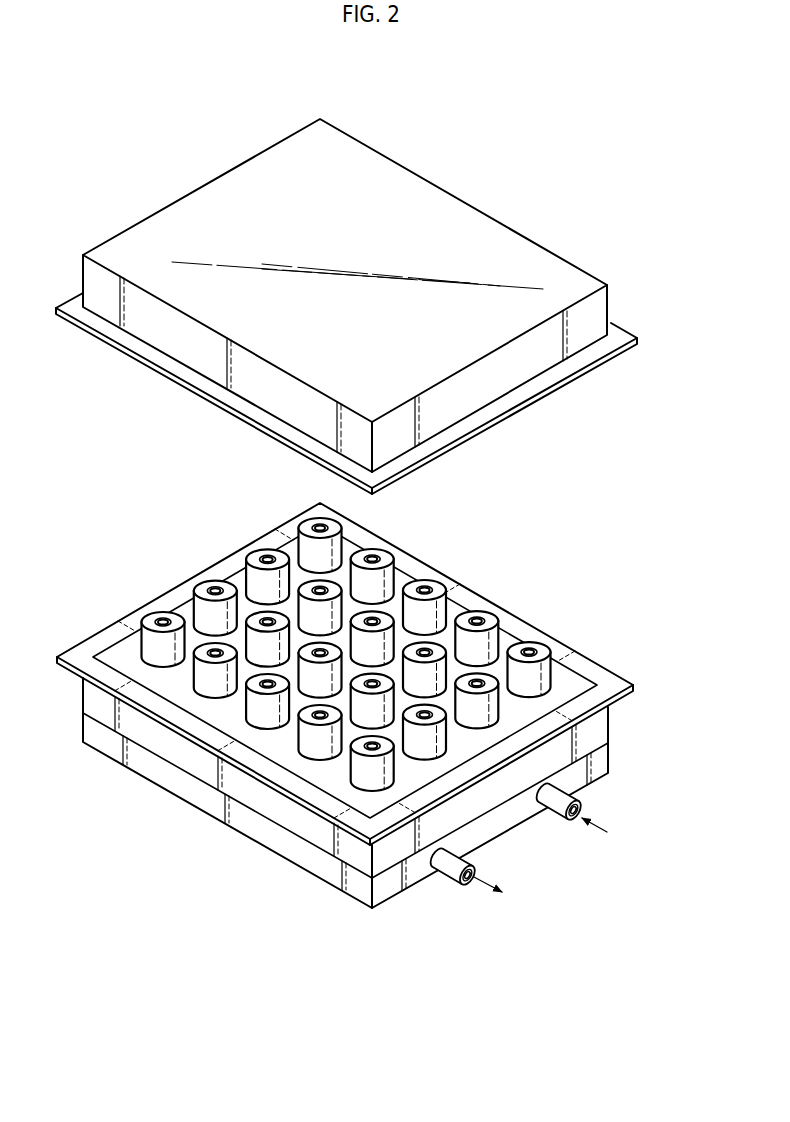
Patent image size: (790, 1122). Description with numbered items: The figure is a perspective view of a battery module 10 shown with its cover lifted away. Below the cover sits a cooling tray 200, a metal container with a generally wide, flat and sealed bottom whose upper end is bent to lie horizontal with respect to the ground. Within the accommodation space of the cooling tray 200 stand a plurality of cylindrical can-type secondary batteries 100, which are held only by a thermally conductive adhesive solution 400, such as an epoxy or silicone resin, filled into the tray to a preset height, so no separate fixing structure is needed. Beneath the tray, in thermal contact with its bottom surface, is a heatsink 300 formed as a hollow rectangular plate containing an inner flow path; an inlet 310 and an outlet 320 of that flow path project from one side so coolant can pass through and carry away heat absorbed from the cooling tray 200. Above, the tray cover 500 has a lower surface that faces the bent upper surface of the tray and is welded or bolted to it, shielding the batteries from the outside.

The battery module 10 is at (177, 82).
The can-type secondary batteries 100 is at (538, 647).
The cooling tray 200 is at (613, 718).
The heatsink 300 is at (595, 765).
The inlet 310 is at (553, 820).
The outlet 320 is at (452, 876).
The thermally conductive adhesive solution 400 is at (572, 687).
The tray cover 500 is at (452, 180).